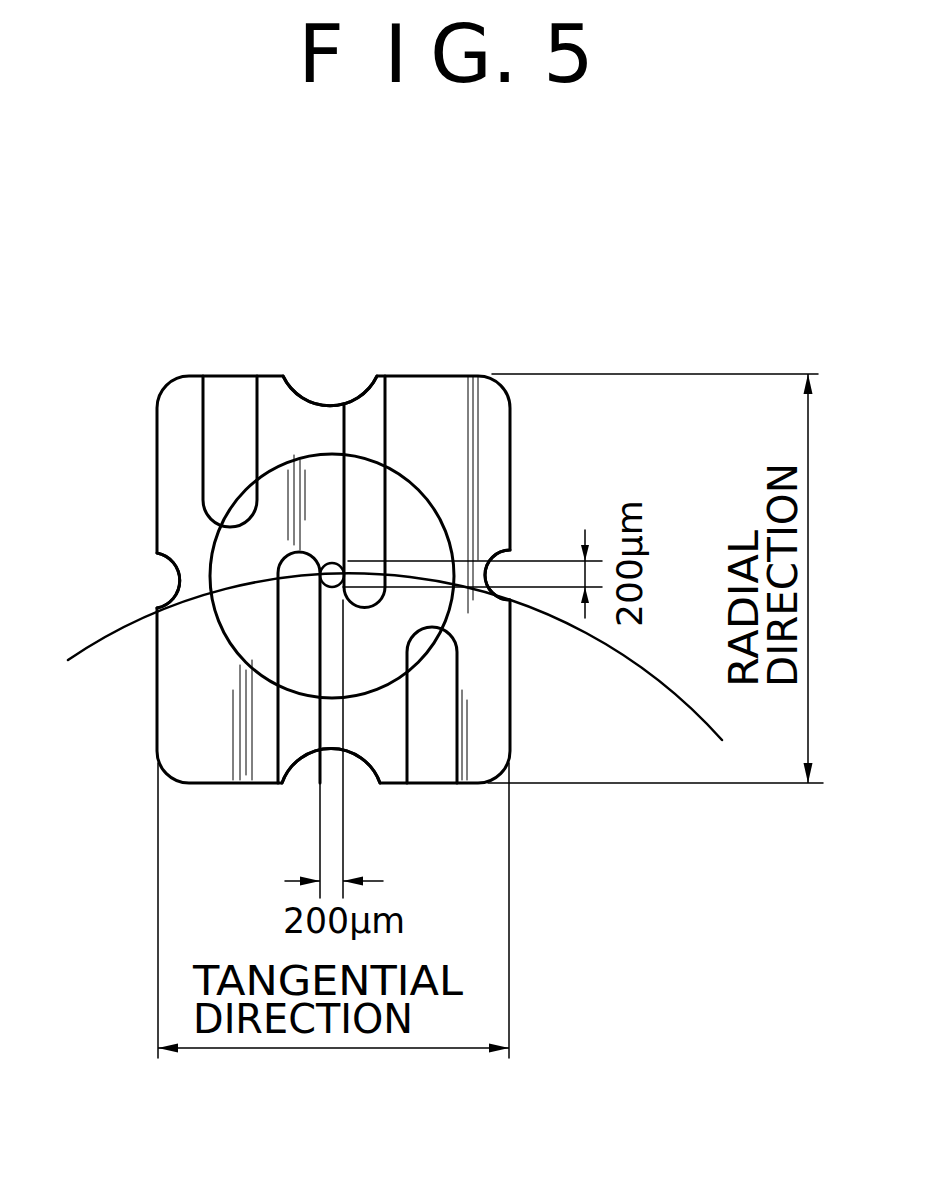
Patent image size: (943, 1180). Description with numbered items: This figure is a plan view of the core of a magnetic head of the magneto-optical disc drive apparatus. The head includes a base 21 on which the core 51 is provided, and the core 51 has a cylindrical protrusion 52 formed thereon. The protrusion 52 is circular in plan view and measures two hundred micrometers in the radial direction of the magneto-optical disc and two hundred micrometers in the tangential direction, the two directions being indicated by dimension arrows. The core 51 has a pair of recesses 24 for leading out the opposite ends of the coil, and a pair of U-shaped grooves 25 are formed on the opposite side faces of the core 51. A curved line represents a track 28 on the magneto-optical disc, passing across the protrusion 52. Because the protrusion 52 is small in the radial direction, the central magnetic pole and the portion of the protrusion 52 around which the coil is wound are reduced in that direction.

The base 21 is at (495, 437).
The recesses 24 is at (237, 397).
The U-shaped grooves 25 is at (372, 388).
The track 28 is at (647, 677).
The core 51 is at (257, 607).
The cylindrical protrusion 52 is at (338, 566).